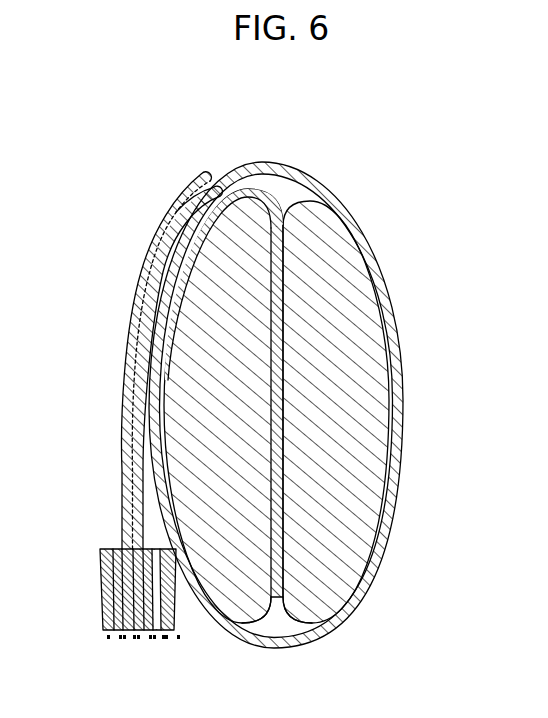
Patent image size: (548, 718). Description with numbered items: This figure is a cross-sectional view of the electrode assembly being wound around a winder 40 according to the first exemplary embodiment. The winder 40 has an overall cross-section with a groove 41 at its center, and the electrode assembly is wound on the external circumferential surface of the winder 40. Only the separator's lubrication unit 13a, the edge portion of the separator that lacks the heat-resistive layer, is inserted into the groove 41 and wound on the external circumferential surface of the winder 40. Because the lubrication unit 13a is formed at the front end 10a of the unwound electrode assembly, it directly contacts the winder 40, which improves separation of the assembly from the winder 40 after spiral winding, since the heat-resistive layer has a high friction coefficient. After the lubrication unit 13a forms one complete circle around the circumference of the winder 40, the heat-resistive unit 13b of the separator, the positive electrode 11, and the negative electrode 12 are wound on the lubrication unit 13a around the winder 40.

The lubrication unit 13a is at (356, 222).
The heat-resistive unit 13b is at (203, 177).
The winder 40 is at (365, 386).
The front end 10a is at (284, 551).
The groove 41 is at (280, 612).
The negative electrode 12 is at (100, 601).
The positive electrode 11 is at (178, 610).